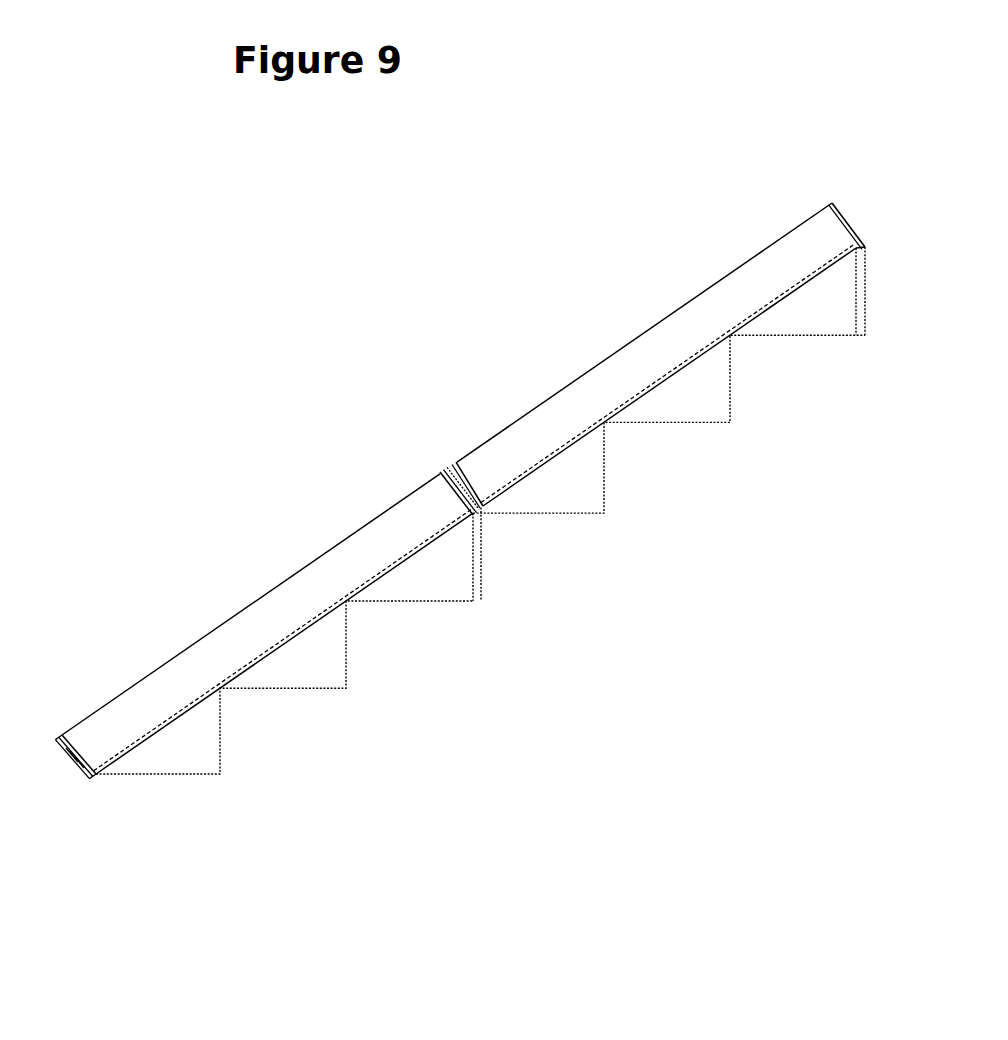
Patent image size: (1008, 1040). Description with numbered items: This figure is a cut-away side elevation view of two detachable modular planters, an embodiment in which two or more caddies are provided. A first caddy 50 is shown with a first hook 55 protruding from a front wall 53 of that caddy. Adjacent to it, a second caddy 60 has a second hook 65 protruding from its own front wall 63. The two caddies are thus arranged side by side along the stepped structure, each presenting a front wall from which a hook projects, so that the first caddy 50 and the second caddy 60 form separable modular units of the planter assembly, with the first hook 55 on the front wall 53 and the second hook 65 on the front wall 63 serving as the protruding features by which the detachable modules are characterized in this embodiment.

The first caddy 50 is at (249, 547).
The front wall 53 is at (75, 735).
The first hook 55 is at (73, 763).
The second caddy 60 is at (440, 473).
The front wall 63 is at (457, 465).
The second hook 65 is at (635, 303).